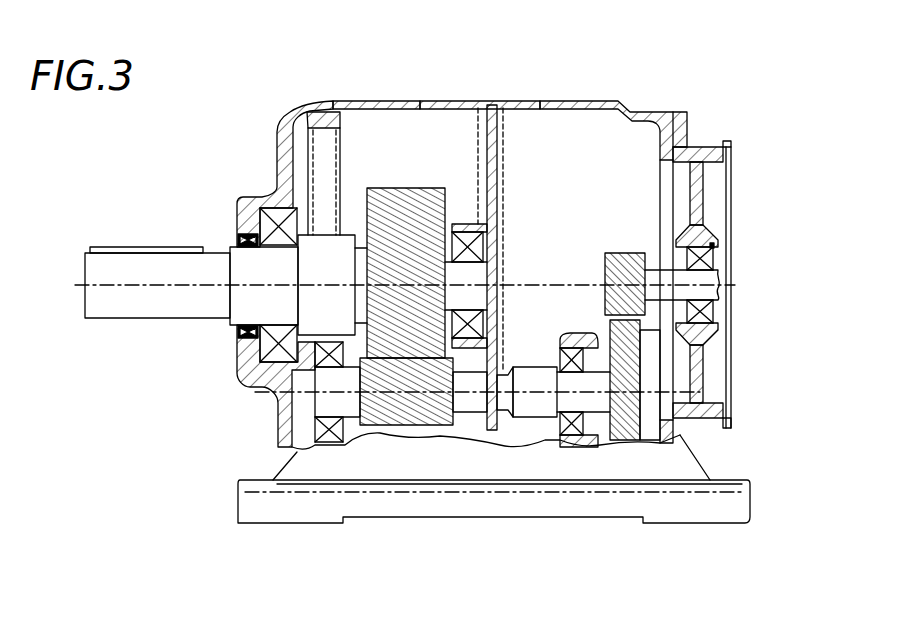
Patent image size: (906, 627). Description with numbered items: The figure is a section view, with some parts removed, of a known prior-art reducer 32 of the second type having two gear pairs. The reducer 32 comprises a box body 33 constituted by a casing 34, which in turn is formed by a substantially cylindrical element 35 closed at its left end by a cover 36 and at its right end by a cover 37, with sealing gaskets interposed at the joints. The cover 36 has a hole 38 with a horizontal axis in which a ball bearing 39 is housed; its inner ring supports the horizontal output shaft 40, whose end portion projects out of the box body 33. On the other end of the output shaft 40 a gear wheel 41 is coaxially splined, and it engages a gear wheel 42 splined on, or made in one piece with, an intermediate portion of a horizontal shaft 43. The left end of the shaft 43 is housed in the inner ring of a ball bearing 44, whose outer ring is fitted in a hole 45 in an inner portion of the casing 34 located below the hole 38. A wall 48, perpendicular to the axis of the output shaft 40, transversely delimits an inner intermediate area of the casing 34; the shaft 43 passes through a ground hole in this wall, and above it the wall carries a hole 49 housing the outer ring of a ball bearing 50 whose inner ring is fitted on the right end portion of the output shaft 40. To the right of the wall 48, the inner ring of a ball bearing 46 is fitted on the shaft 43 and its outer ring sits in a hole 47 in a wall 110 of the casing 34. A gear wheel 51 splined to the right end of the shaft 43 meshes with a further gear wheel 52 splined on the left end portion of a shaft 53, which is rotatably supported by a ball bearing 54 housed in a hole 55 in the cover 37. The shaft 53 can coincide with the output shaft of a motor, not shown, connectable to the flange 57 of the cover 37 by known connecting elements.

The reducer 32 is at (593, 96).
The box body 33 is at (388, 94).
The casing 34 is at (460, 94).
The substantially cylindrical element 35 is at (392, 108).
The cover 36 is at (283, 123).
The cover 37 is at (710, 138).
The hole 38 is at (245, 222).
The ball bearing 39 is at (267, 345).
The output shaft 40 is at (100, 272).
The gear wheel 41 is at (388, 197).
The gear wheel 42 is at (467, 403).
The shaft 43 is at (490, 410).
The ball bearing 44 is at (330, 427).
The hole 45 is at (412, 413).
The ball bearing 46 is at (570, 430).
The hole 47 is at (588, 388).
The wall 48 is at (512, 420).
The hole 49 is at (500, 245).
The ball bearing 50 is at (468, 240).
The gear wheel 51 is at (673, 432).
The gear wheel 52 is at (617, 250).
The shaft 53 is at (710, 288).
The ball bearing 54 is at (697, 247).
The hole 55 is at (713, 260).
The flange 57 is at (722, 162).
The wall 110 is at (643, 327).